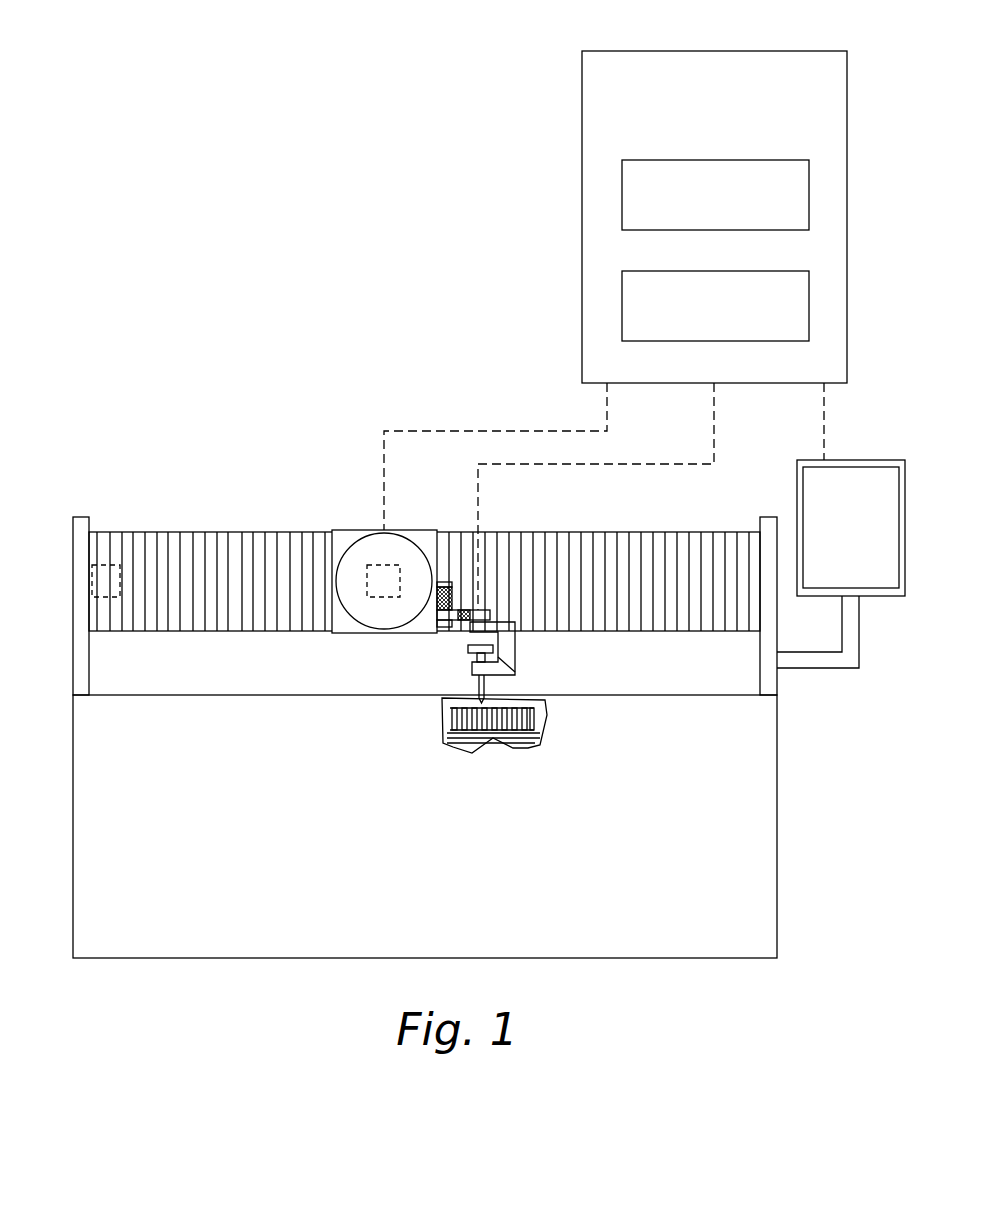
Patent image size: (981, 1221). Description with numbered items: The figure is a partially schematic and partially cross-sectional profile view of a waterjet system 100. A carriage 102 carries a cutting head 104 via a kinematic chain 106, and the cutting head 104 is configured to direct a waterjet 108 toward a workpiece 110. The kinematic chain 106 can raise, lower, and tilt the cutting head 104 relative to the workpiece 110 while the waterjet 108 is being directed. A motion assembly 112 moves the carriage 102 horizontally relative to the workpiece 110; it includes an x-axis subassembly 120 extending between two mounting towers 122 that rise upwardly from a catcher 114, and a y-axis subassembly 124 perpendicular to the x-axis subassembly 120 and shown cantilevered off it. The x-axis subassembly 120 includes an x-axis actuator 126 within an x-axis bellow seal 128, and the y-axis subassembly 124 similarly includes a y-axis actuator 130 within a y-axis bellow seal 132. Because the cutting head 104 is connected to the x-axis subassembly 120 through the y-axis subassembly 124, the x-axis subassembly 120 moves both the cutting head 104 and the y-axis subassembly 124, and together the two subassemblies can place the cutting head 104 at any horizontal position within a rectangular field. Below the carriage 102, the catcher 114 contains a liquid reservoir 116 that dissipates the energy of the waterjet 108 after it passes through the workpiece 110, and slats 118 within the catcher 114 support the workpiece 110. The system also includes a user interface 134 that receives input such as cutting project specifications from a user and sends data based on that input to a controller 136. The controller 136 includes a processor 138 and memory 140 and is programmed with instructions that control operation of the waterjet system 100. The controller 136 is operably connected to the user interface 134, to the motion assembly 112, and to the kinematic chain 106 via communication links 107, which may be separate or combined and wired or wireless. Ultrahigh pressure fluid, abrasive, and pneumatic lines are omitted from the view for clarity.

The waterjet system 100 is at (236, 160).
The carriage 102 is at (364, 547).
The cutting head 104 is at (470, 665).
The kinematic chain 106 is at (508, 635).
The communication links 107 is at (503, 430).
The waterjet 108 is at (481, 703).
The workpiece 110 is at (517, 708).
The motion assembly 112 is at (327, 732).
The catcher 114 is at (425, 826).
The liquid reservoir 116 is at (460, 745).
The slats 118 is at (503, 728).
The x-axis subassembly 120 is at (256, 650).
The mounting towers 122 is at (82, 518).
The y-axis subassembly 124 is at (344, 650).
The x-axis actuator 126 is at (108, 565).
The x-axis bellow seal 128 is at (250, 533).
The y-axis actuator 130 is at (388, 560).
The y-axis bellow seal 132 is at (345, 545).
The user interface 134 is at (841, 564).
The controller 136 is at (582, 93).
The processor 138 is at (622, 192).
The memory 140 is at (622, 310).